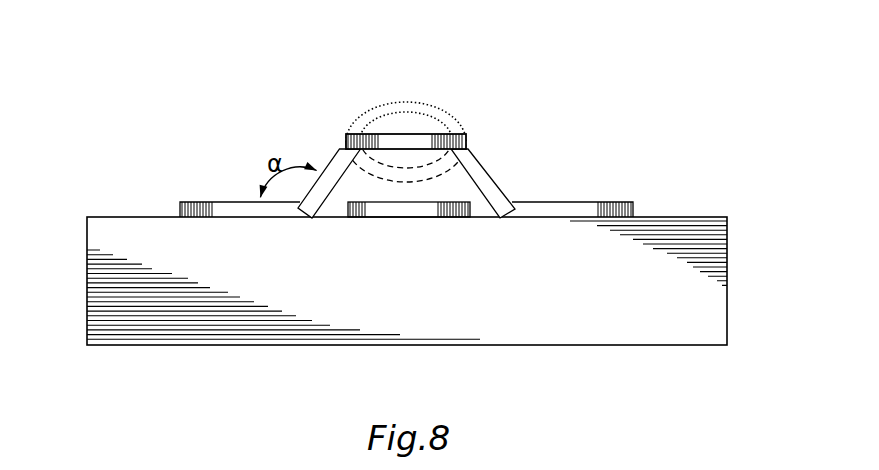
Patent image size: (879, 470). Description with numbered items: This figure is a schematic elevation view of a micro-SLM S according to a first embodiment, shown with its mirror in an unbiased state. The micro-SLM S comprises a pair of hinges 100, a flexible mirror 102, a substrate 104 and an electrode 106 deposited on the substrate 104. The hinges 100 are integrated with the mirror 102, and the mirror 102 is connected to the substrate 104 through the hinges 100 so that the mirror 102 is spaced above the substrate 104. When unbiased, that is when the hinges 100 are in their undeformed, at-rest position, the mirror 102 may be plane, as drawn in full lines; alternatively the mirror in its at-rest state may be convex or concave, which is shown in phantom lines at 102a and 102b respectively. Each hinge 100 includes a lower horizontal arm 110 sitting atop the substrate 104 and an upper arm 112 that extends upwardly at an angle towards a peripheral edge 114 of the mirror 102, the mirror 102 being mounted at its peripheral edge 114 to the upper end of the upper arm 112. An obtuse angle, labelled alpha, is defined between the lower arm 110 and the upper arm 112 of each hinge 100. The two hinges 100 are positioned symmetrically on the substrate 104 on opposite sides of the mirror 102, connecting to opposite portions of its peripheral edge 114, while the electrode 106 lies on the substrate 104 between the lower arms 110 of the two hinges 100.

The micro-SLM S is at (704, 137).
The hinge 100 is at (182, 188).
The flexible mirror 102 is at (379, 126).
The convex mirror shape 102a is at (357, 110).
The concave mirror shape 102b is at (386, 178).
The substrate 104 is at (731, 256).
The electrode 106 is at (428, 208).
The lower horizontal arm 110 is at (182, 217).
The upper arm 112 is at (330, 162).
The peripheral edge 114 is at (344, 137).